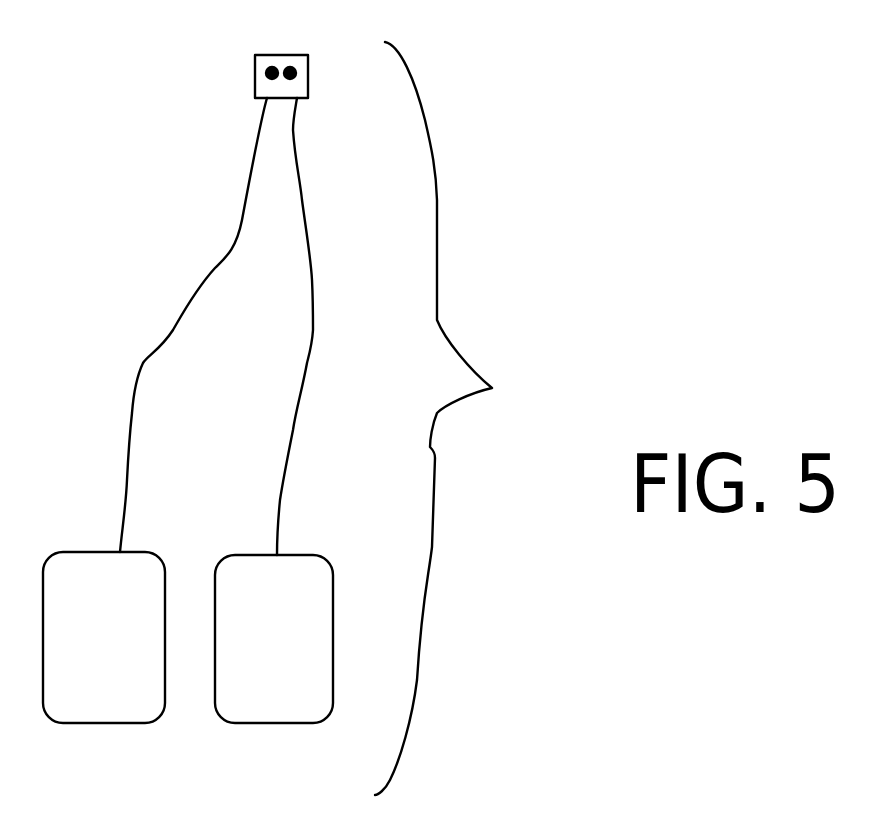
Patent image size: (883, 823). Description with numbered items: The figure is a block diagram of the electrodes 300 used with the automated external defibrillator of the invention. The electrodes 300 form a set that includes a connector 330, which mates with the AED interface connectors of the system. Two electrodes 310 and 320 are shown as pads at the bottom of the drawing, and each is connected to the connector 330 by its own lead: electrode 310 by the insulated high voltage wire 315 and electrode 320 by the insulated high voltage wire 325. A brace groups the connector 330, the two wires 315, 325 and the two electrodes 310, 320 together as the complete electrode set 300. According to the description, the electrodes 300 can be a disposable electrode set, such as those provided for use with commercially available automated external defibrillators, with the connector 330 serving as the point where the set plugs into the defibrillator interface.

The electrodes 300 is at (471, 418).
The electrode 310 is at (125, 649).
The electrode 320 is at (295, 649).
The insulated high voltage wire 315 is at (240, 223).
The insulated high voltage wire 325 is at (315, 300).
The connector 330 is at (255, 57).